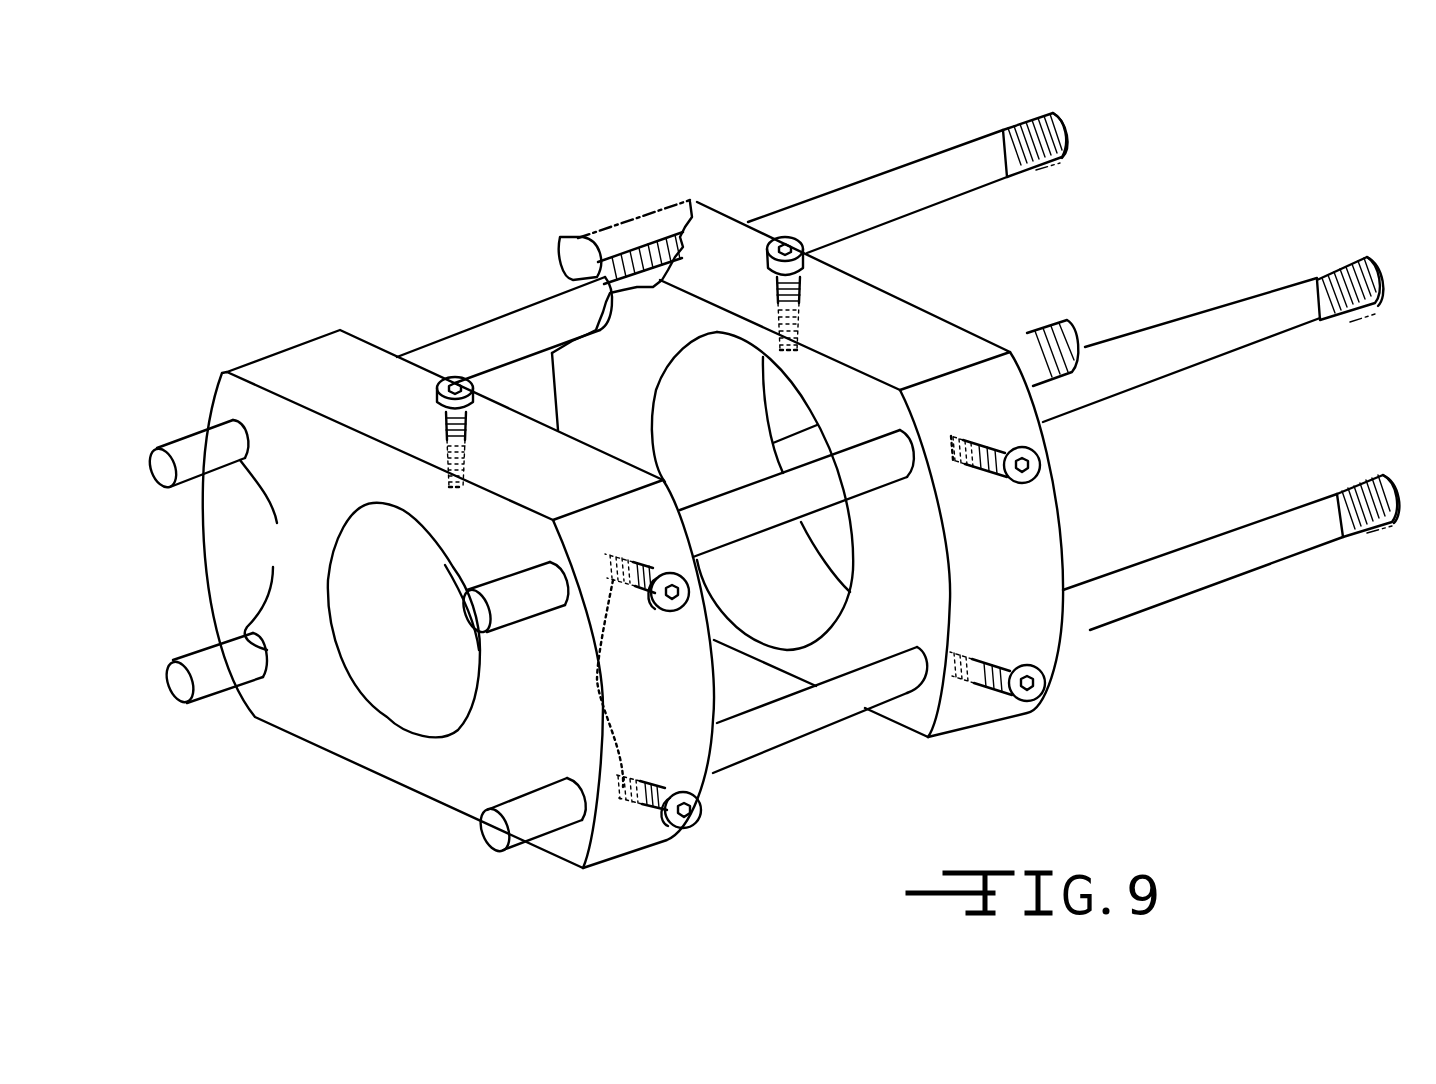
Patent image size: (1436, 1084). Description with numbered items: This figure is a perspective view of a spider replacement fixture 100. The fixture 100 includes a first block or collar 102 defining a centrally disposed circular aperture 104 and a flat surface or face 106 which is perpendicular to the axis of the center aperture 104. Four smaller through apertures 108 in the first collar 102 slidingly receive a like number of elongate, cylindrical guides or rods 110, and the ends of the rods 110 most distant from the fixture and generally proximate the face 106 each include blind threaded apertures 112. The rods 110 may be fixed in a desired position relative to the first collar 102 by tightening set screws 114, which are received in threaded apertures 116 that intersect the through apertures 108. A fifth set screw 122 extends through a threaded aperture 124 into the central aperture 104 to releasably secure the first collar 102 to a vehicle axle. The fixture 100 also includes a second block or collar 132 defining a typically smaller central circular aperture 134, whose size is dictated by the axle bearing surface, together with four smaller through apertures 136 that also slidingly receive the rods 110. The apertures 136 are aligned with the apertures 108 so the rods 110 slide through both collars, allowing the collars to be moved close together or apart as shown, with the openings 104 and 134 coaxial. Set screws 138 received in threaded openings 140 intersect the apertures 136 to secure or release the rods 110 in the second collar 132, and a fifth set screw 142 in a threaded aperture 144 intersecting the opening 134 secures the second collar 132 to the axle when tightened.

The spider replacement fixture 100 is at (420, 272).
The first block or collar 102 is at (1013, 623).
The centrally disposed circular aperture 104 is at (734, 436).
The flat surface or face 106 is at (985, 333).
The through apertures 108 is at (665, 206).
The elongate cylindrical guides or rods 110 is at (1225, 562).
The blind threaded apertures 112 is at (1067, 140).
The set screws 114 is at (560, 255).
The threaded apertures 116 is at (965, 440).
The fifth set screw 122 is at (808, 258).
The threaded aperture 124 is at (803, 315).
The second block or collar 132 is at (325, 716).
The centrally disposed circular aperture 134 is at (404, 634).
The through apertures 136 is at (270, 555).
The set screws 138 is at (218, 378).
The threaded openings 140 is at (603, 707).
The fifth set screw 142 is at (440, 400).
The threaded aperture 144 is at (470, 457).